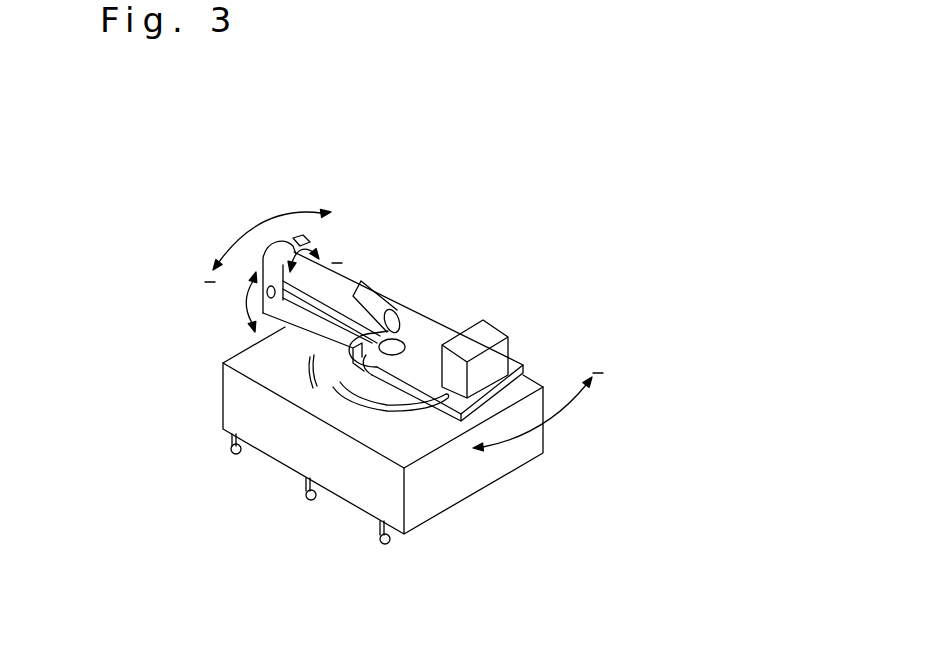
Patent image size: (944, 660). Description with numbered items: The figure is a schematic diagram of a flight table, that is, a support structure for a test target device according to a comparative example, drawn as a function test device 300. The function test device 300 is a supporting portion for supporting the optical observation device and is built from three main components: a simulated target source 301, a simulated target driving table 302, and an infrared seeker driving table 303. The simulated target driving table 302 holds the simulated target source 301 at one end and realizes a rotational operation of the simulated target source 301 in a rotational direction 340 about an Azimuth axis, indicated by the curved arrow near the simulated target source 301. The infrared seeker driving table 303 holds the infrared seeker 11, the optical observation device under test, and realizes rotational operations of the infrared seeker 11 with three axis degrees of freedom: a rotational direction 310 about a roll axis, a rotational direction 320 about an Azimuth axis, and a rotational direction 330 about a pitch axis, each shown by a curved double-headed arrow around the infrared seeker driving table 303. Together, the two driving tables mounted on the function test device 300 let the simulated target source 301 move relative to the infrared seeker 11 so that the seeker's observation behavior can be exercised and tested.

The function test device 300 is at (308, 529).
The simulated target source 301 is at (506, 352).
The simulated target driving table 302 is at (413, 340).
The infrared seeker driving table 303 is at (375, 190).
The infrared seeker 11 is at (342, 290).
The roll-axis rotational direction 310 is at (322, 256).
The azimuth-axis rotational direction 320 is at (236, 243).
The pitch-axis rotational direction 330 is at (246, 297).
The azimuth-axis rotational direction 340 is at (542, 420).